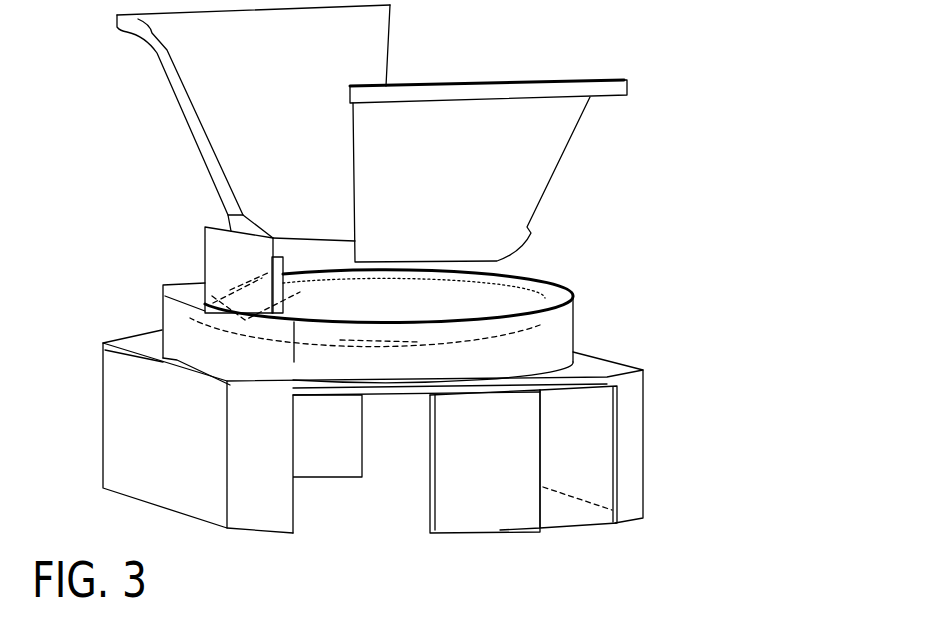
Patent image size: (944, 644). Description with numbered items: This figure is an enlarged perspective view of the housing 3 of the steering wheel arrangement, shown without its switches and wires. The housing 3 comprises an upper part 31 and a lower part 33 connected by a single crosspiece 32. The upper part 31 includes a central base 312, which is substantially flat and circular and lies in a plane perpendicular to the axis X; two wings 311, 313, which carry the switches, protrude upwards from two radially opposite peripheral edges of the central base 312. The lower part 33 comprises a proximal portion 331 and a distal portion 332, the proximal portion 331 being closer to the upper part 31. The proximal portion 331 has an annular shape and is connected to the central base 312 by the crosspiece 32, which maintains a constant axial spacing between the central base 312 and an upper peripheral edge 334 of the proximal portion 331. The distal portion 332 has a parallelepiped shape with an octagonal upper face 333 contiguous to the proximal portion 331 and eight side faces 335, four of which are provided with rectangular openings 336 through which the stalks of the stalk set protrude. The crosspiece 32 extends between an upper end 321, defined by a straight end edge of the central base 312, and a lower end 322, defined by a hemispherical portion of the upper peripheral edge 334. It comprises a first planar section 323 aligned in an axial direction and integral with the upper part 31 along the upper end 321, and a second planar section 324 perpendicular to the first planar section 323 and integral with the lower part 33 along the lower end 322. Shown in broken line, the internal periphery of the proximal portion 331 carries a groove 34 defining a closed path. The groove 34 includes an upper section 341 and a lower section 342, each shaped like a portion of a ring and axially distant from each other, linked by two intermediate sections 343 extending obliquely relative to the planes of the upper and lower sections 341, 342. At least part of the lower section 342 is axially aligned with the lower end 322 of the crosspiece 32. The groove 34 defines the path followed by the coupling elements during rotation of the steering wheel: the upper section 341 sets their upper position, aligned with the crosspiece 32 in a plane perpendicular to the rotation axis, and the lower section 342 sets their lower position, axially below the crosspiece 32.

The housing 3 is at (694, 232).
The upper part 31 is at (174, 93).
The wing 311 is at (560, 165).
The central base 312 is at (291, 218).
The wing 313 is at (392, 38).
The crosspiece 32 is at (204, 253).
The upper end 321 is at (227, 212).
The lower end 322 is at (180, 287).
The first planar section 323 is at (250, 275).
The second planar section 324 is at (207, 306).
The lower part 33 is at (162, 312).
The proximal portion 331 is at (577, 325).
The distal portion 332 is at (646, 452).
The octagonal upper face 333 is at (598, 372).
The upper peripheral edge 334 is at (555, 284).
The side face 335 is at (468, 505).
The rectangular opening 336 is at (576, 514).
The groove 34 is at (168, 334).
The upper section 341 is at (520, 330).
The lower section 342 is at (303, 368).
The intermediate section 343 is at (373, 352).